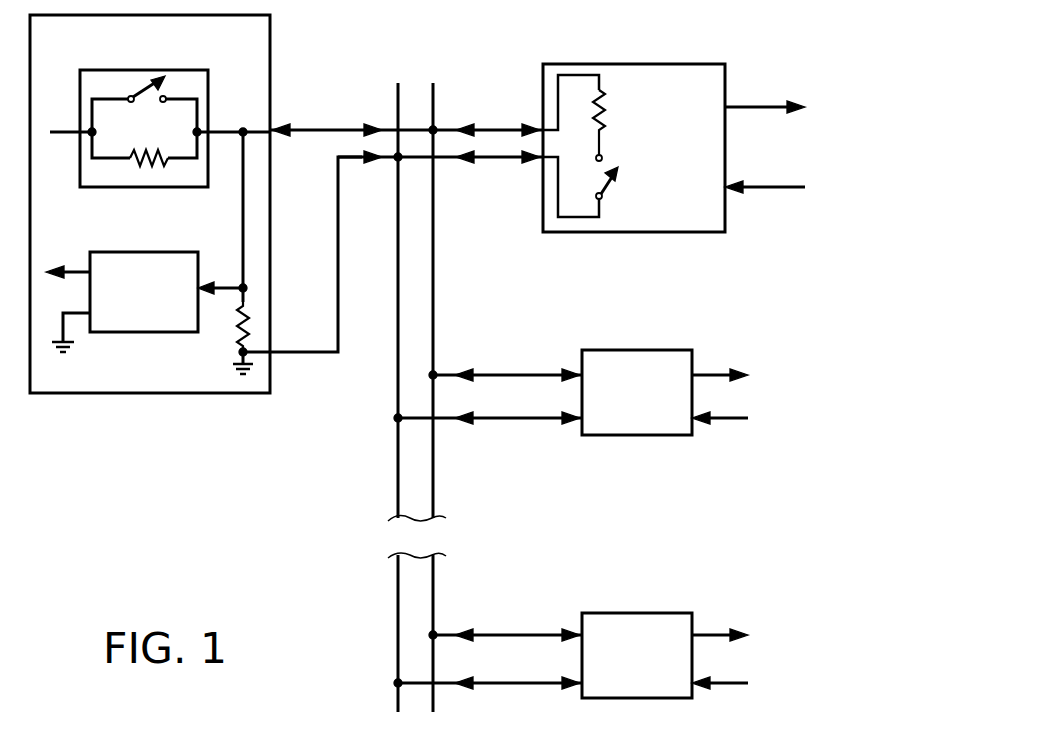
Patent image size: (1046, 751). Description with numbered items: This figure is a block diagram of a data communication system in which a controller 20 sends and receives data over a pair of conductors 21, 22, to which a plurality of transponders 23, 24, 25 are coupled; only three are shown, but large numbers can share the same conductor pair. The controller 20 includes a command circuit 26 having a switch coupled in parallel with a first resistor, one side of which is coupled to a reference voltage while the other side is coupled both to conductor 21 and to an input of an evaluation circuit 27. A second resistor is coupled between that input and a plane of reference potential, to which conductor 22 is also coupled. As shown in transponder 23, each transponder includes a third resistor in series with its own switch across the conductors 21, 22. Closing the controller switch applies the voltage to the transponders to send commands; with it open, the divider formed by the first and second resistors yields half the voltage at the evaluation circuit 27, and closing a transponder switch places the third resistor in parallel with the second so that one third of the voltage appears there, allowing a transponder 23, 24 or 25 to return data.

The controller 20 is at (196, 220).
The conductor 21 is at (433, 275).
The conductor 22 is at (398, 305).
The transponder 23 is at (664, 233).
The transponder 24 is at (644, 436).
The transponder 25 is at (650, 699).
The command circuit 26 is at (198, 70).
The evaluation circuit 27 is at (142, 333).